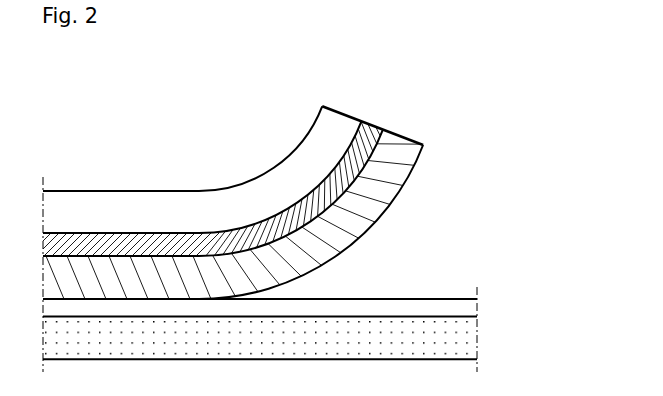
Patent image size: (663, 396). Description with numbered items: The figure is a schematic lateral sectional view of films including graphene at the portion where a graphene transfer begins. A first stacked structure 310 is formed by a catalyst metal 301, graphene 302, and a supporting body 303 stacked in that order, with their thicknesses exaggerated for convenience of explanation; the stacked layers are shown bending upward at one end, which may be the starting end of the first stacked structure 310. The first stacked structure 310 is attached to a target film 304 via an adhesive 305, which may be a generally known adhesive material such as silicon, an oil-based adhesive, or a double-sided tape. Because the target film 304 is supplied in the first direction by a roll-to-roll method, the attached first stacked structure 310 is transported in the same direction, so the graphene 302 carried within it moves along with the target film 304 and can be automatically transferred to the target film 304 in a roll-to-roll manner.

The first stacked structure 310 is at (229, 168).
The supporting body 303 is at (340, 122).
The graphene 302 is at (374, 125).
The catalyst metal 301 is at (403, 134).
The adhesive 305 is at (474, 306).
The target film 304 is at (470, 342).